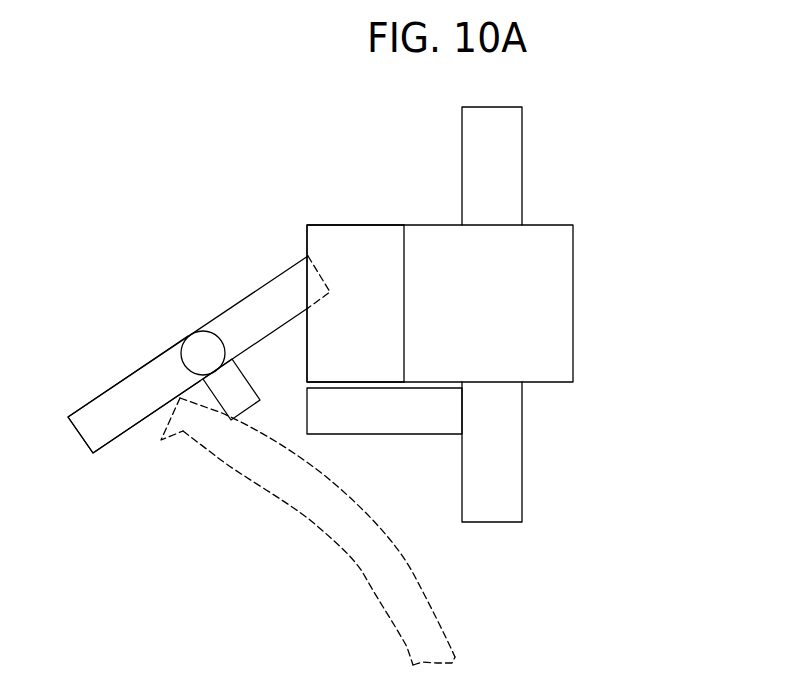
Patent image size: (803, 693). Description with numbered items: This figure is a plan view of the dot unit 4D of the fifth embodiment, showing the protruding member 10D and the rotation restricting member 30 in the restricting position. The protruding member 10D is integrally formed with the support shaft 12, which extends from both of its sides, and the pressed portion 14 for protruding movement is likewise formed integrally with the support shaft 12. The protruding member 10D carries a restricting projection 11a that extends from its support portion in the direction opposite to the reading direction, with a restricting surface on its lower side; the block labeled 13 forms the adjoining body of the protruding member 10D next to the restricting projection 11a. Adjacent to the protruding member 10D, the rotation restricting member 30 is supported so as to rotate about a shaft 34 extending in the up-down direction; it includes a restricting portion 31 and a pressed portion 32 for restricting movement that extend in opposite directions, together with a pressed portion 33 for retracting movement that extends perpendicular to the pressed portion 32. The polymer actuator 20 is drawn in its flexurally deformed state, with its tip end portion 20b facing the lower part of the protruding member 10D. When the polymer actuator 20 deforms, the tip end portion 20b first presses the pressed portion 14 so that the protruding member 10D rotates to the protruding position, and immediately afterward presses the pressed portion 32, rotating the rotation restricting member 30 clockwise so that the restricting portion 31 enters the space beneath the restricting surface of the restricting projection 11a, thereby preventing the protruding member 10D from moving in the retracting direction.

The dot unit 4D is at (600, 195).
The protruding member 10D is at (408, 193).
The restricting projection 11a is at (346, 242).
The support shaft 12 is at (510, 463).
The body block 13 is at (557, 302).
The pressed portion for protruding movement 14 is at (389, 421).
The polymer actuator 20 is at (307, 512).
The tip end portion 20b is at (161, 440).
The rotation restricting member 30 is at (200, 277).
The restricting portion 31 is at (267, 298).
The pressed portion for restricting movement 32 is at (102, 410).
The pressed portion for retracting movement 33 is at (230, 403).
The shaft 34 is at (192, 352).